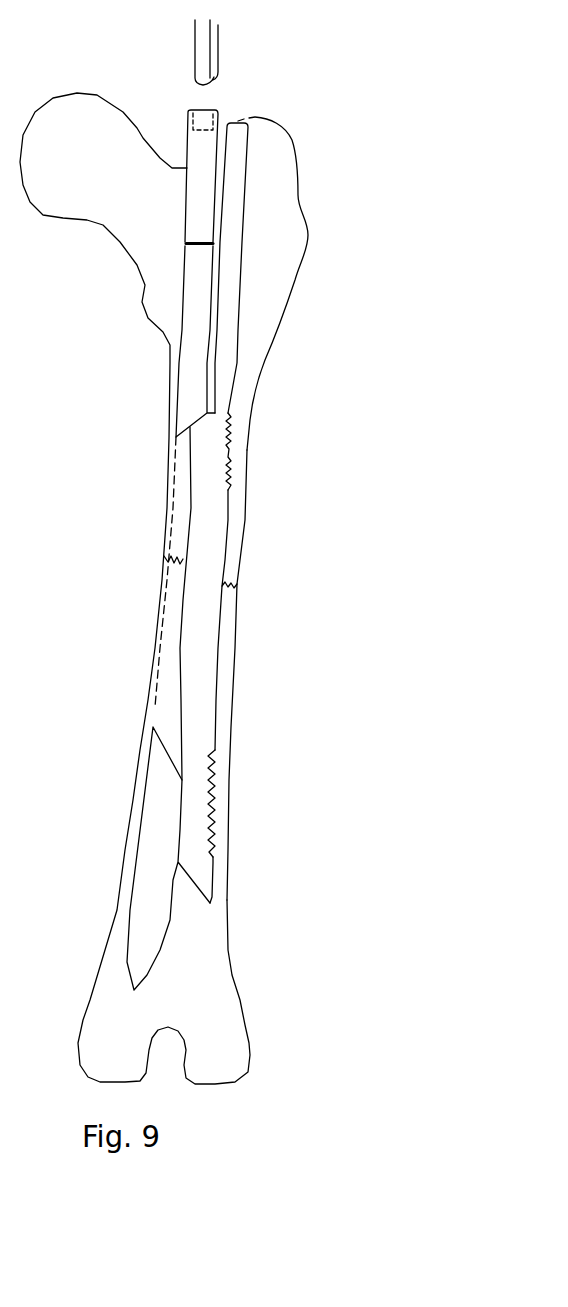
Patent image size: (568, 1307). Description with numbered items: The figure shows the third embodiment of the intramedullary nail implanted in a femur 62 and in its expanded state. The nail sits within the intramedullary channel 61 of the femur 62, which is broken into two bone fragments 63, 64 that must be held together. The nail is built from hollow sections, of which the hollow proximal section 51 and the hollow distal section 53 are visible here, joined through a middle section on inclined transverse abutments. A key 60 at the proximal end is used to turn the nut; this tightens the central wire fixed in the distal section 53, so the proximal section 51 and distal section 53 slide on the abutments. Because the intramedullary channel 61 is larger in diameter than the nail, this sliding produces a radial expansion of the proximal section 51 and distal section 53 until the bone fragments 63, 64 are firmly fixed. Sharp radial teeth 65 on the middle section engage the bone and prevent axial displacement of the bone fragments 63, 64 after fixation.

The hollow proximal section 51 is at (193, 321).
The hollow distal section 53 is at (160, 845).
The key 60 is at (203, 63).
The intramedullary channel 61 is at (172, 623).
The femur 62 is at (254, 513).
The bone fragment 63 is at (230, 537).
The bone fragment 64 is at (227, 688).
The sharp radial teeth 65 is at (231, 453).